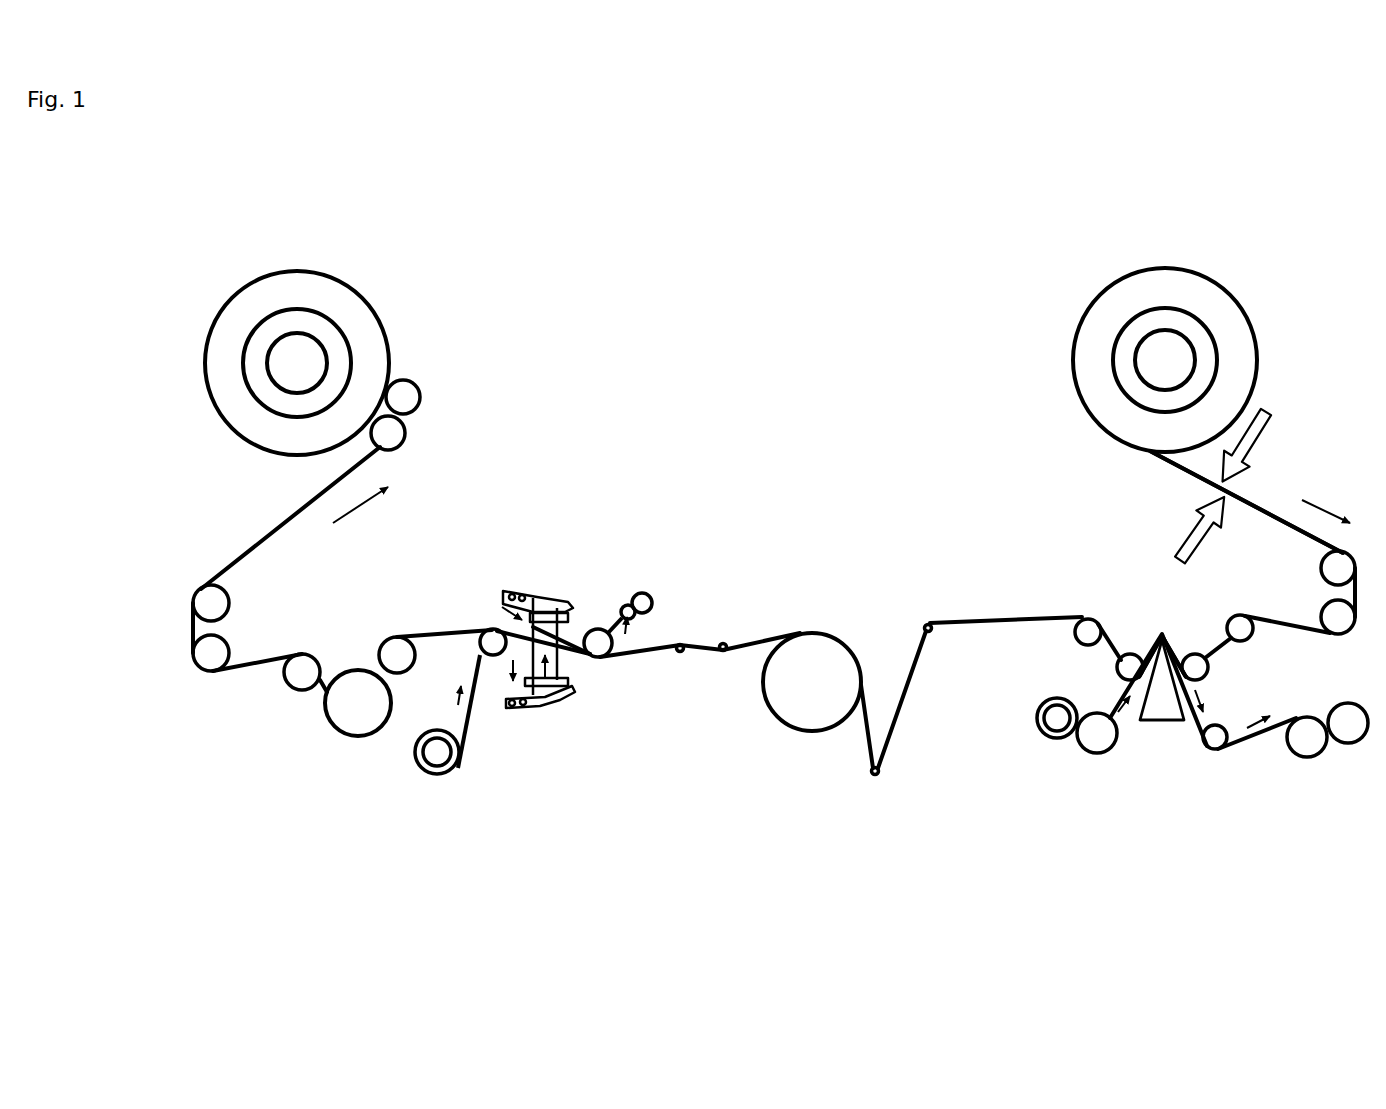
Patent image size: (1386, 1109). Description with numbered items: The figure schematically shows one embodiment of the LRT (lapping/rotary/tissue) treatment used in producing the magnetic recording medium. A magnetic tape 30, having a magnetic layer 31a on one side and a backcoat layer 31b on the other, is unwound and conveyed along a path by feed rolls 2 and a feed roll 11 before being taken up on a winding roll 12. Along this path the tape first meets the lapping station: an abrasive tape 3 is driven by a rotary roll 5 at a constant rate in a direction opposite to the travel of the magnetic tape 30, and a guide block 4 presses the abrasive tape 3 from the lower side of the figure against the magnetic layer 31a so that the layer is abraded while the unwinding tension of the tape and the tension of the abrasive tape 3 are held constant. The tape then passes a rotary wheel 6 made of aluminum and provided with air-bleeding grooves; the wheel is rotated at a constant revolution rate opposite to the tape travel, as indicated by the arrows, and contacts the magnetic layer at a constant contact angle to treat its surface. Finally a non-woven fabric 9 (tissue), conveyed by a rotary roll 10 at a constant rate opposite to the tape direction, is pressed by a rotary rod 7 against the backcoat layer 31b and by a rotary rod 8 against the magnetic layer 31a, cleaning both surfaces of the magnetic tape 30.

The feed rolls 2 is at (222, 655).
The abrasive tape 3 is at (1248, 735).
The block for an abrasive tape 4 is at (1157, 710).
The rotary roll for an abrasive tape 5 is at (1056, 730).
The rotary wheel 6 is at (793, 712).
The rotary rod 7 is at (600, 627).
The rotary rod 8 is at (493, 660).
The non-woven fabric 9 is at (546, 699).
The rotary roll for a non-woven fabric 10 is at (422, 765).
The feed roll 11 is at (355, 688).
The winding roll 12 is at (389, 337).
The magnetic tape 30 is at (1272, 505).
The magnetic layer 31a is at (1194, 360).
The backcoat layer 31b is at (1167, 627).